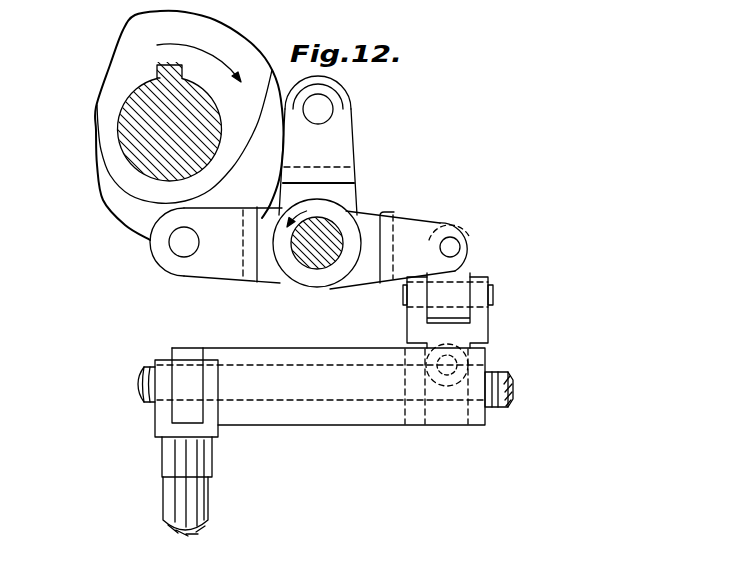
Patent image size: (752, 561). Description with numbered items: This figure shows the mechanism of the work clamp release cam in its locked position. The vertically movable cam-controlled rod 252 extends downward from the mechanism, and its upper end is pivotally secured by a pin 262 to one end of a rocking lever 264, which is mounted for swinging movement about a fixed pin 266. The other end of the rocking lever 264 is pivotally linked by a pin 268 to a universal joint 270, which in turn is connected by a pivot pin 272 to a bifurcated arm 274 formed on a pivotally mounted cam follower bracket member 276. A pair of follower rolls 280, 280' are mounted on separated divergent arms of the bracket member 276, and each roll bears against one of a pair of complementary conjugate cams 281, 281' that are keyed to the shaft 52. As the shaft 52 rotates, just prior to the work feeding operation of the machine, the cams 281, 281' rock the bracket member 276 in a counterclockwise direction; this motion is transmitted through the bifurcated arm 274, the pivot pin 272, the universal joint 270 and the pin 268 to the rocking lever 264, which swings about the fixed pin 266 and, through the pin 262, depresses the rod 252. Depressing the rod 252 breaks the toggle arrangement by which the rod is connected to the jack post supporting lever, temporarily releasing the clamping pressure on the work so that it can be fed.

The shaft 52 is at (133, 93).
The conjugate cam 281' is at (160, 125).
The conjugate cam 281 is at (154, 136).
The follower roll 280 is at (349, 145).
The follower roll 280' is at (146, 243).
The cam follower bracket member 276 is at (350, 215).
The bifurcated arm 274 is at (460, 224).
The pivot pin 272 is at (460, 247).
The universal joint 270 is at (478, 368).
The rocking lever 264 is at (313, 337).
The pin 262 is at (142, 376).
The fixed pin 266 is at (140, 393).
The pin 268 is at (506, 382).
The cam-controlled rod 252 is at (210, 490).